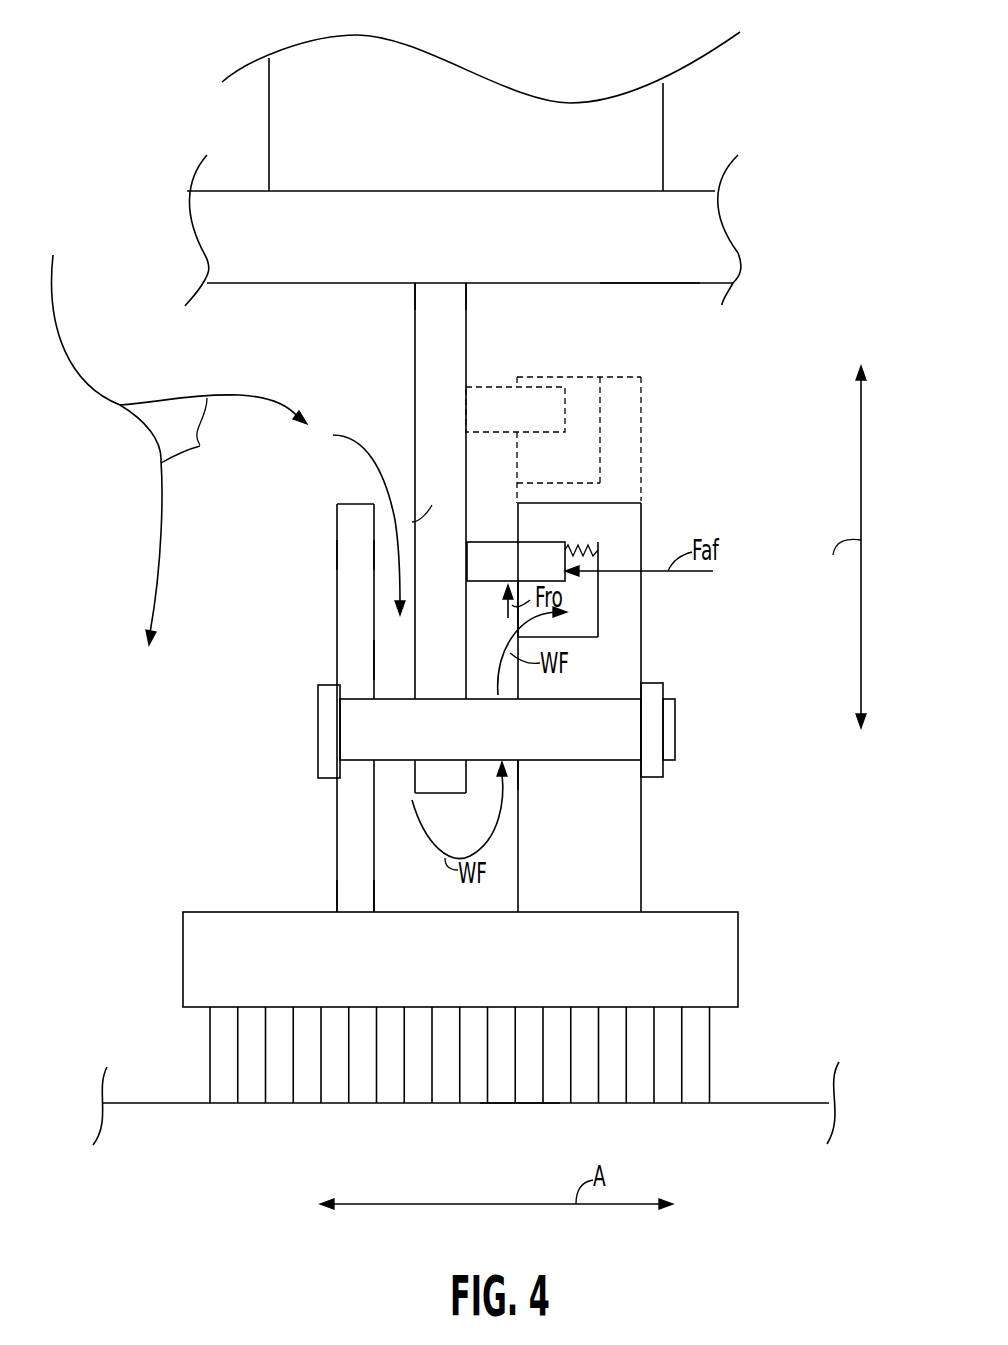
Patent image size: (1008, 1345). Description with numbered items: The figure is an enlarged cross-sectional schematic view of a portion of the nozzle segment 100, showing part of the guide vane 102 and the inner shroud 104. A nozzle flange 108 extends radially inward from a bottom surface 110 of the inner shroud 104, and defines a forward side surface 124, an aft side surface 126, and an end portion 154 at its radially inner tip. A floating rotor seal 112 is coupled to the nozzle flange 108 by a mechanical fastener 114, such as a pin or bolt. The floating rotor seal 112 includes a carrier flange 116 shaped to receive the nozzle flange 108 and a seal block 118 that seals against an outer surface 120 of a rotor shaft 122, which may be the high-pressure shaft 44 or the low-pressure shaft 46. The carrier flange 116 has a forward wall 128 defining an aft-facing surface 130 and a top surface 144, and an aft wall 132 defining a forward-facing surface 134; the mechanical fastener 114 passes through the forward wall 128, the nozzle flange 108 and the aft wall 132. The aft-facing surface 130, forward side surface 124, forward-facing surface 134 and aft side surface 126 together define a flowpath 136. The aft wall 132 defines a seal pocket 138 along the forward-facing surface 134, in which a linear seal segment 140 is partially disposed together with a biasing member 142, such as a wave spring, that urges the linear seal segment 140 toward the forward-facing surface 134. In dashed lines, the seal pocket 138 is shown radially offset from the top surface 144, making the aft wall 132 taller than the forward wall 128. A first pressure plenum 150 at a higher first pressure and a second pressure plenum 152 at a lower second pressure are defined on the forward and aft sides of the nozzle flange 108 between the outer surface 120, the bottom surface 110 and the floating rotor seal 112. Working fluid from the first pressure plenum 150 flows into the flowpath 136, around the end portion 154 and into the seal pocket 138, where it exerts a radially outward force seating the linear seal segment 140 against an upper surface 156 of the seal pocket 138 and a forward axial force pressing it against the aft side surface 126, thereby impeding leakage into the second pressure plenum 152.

The nozzle segment 100 is at (768, 35).
The guide vane 102 is at (505, 166).
The inner shroud 104 is at (655, 251).
The nozzle flange 108 is at (455, 345).
The bottom surface 110 is at (653, 283).
The floating rotor seal 112 is at (172, 956).
The mechanical fastener 114 is at (628, 741).
The carrier flange 116 is at (312, 804).
The seal block 118 is at (503, 1001).
The outer surface 120 is at (751, 1101).
The rotor shaft 122 is at (464, 1139).
The high-pressure shaft 44 is at (464, 1139).
The low-pressure shaft 46 is at (520, 1116).
The forward side surface 124 is at (400, 298).
The aft side surface 126 is at (467, 295).
The forward wall 128 is at (357, 553).
The aft-facing surface 130 is at (375, 890).
The aft wall 132 is at (628, 846).
The forward-facing surface 134 is at (517, 893).
The flowpath 136 is at (400, 663).
The seal pocket 138 is at (583, 432).
The linear seal segment 140 is at (535, 426).
The biasing member 142 is at (643, 517).
The top surface 144 is at (350, 503).
The first pressure plenum 150 is at (273, 375).
The second pressure plenum 152 is at (743, 357).
The end portion 154 is at (437, 805).
The upper surface 156 is at (576, 388).